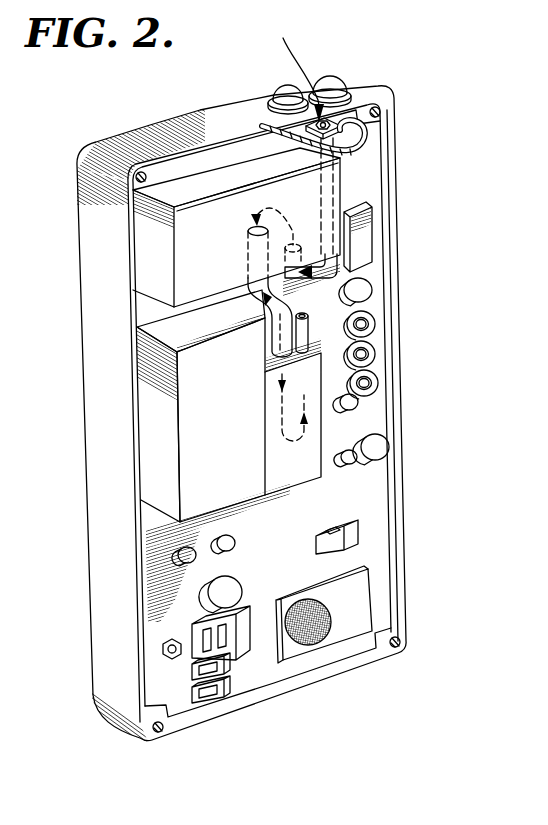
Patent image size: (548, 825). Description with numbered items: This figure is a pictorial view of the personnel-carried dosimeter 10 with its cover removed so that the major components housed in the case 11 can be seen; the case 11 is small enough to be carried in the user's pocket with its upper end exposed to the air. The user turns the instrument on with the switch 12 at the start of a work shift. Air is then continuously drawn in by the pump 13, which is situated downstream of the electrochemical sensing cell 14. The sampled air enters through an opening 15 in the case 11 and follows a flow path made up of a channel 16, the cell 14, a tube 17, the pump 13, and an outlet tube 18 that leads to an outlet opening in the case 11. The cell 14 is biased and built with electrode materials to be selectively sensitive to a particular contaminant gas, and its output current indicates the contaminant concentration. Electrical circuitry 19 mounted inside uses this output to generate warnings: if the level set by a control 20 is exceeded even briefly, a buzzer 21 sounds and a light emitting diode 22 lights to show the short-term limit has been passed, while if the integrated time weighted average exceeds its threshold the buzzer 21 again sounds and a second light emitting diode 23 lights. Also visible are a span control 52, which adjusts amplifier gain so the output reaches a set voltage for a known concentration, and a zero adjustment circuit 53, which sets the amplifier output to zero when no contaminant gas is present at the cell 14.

The dosimeter 10 is at (76, 525).
The case 11 is at (108, 647).
The switch 12 is at (354, 542).
The pump 13 is at (197, 448).
The electrochemical sensing cell 14 is at (190, 263).
The opening 15 is at (345, 136).
The channel 16 is at (336, 182).
The tube 17 is at (258, 297).
The outlet tube 18 is at (308, 333).
The electrical circuitry 19 is at (334, 498).
The control 20 is at (377, 384).
The buzzer 21 is at (313, 633).
The light emitting diode 22 is at (340, 80).
The light emitting diode 23 is at (274, 87).
The control 52 is at (374, 355).
The zero adjustment circuit 53 is at (372, 325).